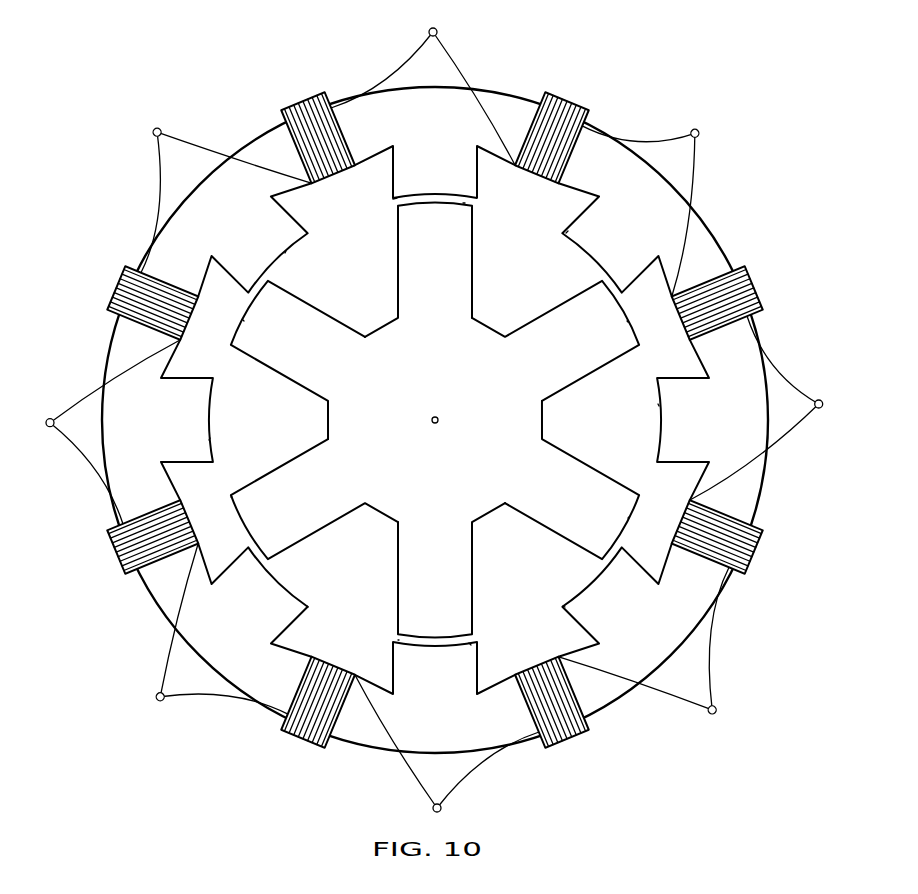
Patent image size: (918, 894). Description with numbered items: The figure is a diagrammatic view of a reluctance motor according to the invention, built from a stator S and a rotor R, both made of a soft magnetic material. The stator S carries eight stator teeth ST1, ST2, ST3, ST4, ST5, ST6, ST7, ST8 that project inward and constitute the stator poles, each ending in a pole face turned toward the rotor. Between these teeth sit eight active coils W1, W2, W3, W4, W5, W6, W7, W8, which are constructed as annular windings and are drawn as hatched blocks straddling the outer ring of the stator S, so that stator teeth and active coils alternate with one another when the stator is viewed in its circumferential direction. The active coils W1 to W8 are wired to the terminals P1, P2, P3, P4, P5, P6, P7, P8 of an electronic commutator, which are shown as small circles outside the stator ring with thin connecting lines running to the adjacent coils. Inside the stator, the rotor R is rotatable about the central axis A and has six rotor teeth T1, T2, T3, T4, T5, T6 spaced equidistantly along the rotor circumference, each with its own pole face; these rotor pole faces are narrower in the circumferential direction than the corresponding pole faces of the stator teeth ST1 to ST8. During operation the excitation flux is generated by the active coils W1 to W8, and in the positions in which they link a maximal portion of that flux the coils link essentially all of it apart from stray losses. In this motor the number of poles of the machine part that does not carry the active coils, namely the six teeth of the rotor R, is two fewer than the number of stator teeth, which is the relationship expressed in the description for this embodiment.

The stator S is at (677, 204).
The rotor R is at (435, 420).
The axis A is at (438, 418).
The stator tooth ST1 is at (278, 222).
The stator tooth ST2 is at (464, 186).
The stator tooth ST3 is at (602, 240).
The stator tooth ST4 is at (686, 447).
The stator tooth ST5 is at (590, 614).
The stator tooth ST6 is at (398, 665).
The stator tooth ST7 is at (252, 578).
The stator tooth ST8 is at (188, 392).
The active coil W1 is at (346, 139).
The active coil W2 is at (581, 141).
The active coil W3 is at (728, 327).
The active coil W4 is at (700, 561).
The active coil W5 is at (520, 700).
The active coil W6 is at (342, 715).
The active coil W7 is at (170, 560).
The active coil W8 is at (141, 327).
The terminal P1 is at (437, 31).
The terminal P2 is at (698, 136).
The terminal P3 is at (818, 400).
The terminal P4 is at (715, 709).
The terminal P5 is at (434, 807).
The terminal P6 is at (161, 701).
The terminal P7 is at (52, 419).
The terminal P8 is at (168, 128).
The rotor tooth T1 is at (464, 248).
The rotor tooth T2 is at (588, 362).
The rotor tooth T3 is at (530, 518).
The rotor tooth T4 is at (403, 553).
The rotor tooth T5 is at (278, 472).
The rotor tooth T6 is at (317, 323).